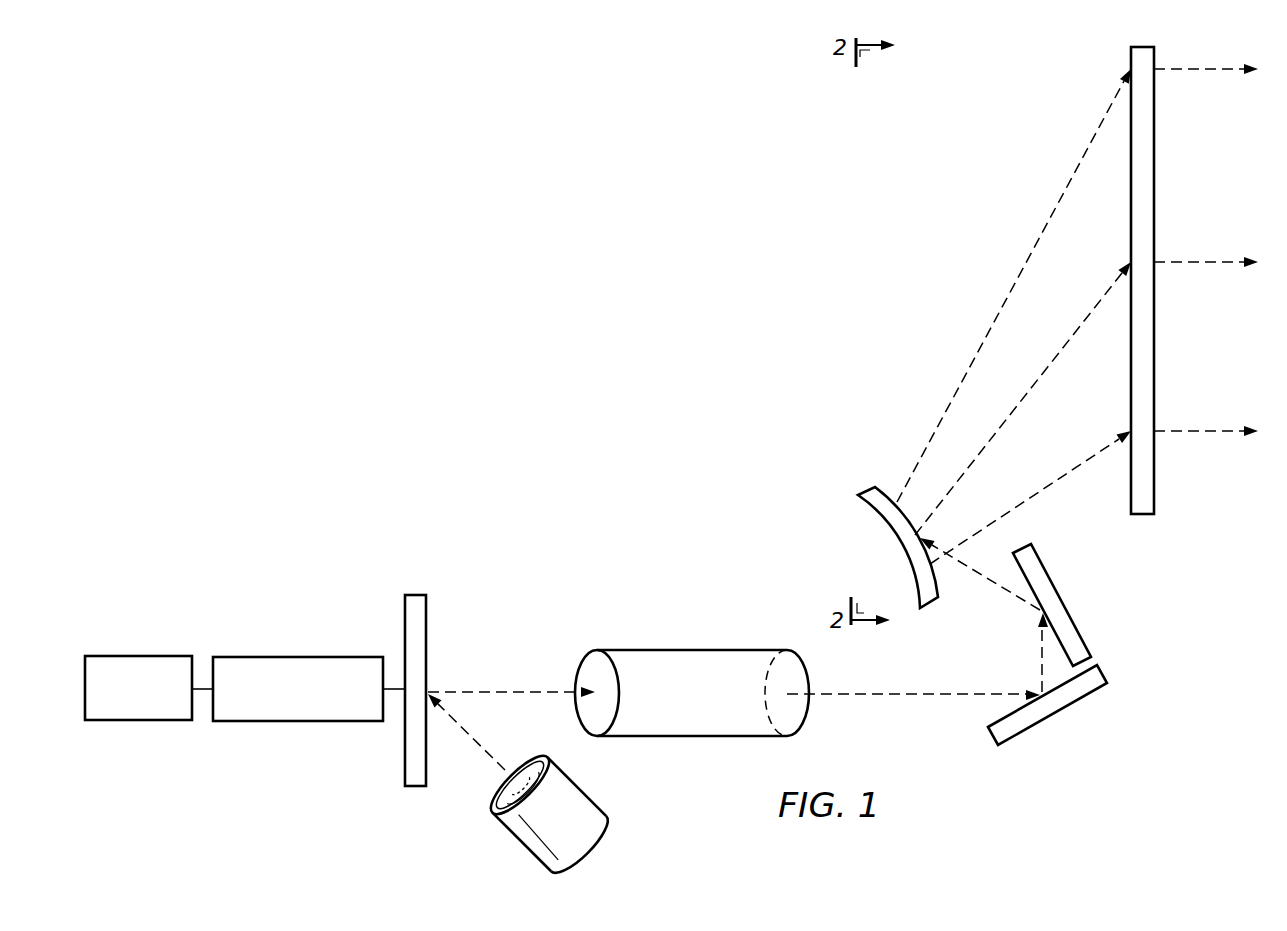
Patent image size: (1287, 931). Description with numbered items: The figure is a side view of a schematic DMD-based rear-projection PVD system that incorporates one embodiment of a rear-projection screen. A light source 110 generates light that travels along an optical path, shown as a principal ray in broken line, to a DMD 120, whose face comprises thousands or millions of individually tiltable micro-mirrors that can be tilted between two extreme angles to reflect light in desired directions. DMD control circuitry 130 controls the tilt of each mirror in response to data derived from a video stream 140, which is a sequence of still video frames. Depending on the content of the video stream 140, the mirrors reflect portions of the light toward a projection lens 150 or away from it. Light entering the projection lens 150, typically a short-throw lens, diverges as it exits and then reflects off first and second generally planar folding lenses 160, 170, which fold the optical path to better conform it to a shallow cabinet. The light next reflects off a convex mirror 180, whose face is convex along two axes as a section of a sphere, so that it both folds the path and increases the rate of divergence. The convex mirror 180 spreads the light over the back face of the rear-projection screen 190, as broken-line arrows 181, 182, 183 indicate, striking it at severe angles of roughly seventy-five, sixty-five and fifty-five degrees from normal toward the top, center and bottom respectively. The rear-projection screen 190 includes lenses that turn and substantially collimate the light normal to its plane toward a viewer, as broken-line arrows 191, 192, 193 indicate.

The light source 110 is at (577, 780).
The DMD 120 is at (413, 787).
The DMD control circuitry 130 is at (298, 722).
The video stream 140 is at (137, 722).
The projection lens 150 is at (692, 650).
The first generally planar folding lens 160 is at (1053, 720).
The second generally planar folding lens 170 is at (1063, 598).
The convex mirror 180 is at (865, 485).
The broken-line arrow 181 is at (1012, 295).
The broken-line arrow 182 is at (1032, 387).
The broken-line arrow 183 is at (1048, 487).
The rear-projection screen 190 is at (1154, 174).
The broken-line arrow 191 is at (1199, 70).
The broken-line arrow 192 is at (1199, 262).
The broken-line arrow 193 is at (1195, 432).